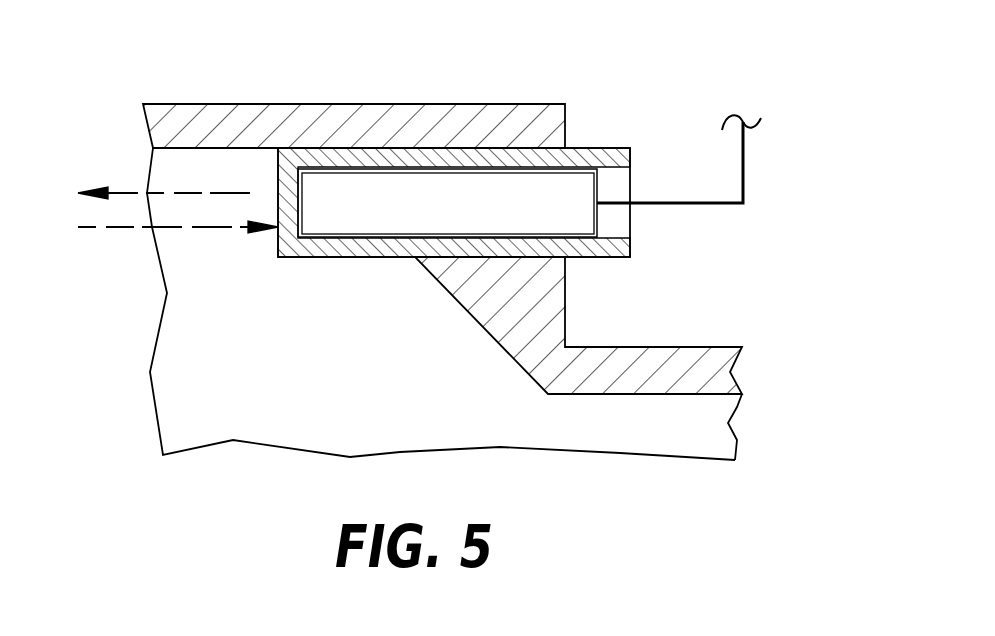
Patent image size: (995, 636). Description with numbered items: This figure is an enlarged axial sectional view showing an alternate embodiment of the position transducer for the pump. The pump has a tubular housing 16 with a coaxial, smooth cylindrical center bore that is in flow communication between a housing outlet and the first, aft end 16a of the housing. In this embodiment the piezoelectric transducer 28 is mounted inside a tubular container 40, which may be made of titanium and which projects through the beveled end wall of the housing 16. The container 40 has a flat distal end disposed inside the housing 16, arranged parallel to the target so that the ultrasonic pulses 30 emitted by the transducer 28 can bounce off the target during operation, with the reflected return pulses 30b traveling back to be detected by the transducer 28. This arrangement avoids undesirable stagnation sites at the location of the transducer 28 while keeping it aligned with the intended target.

The tubular housing 16 is at (272, 104).
The first, aft end 16a is at (565, 302).
The transducer 28 is at (453, 220).
The ultrasonic pulses 30 is at (132, 191).
The return pulses 30b is at (173, 229).
The tubular container 40 is at (590, 148).